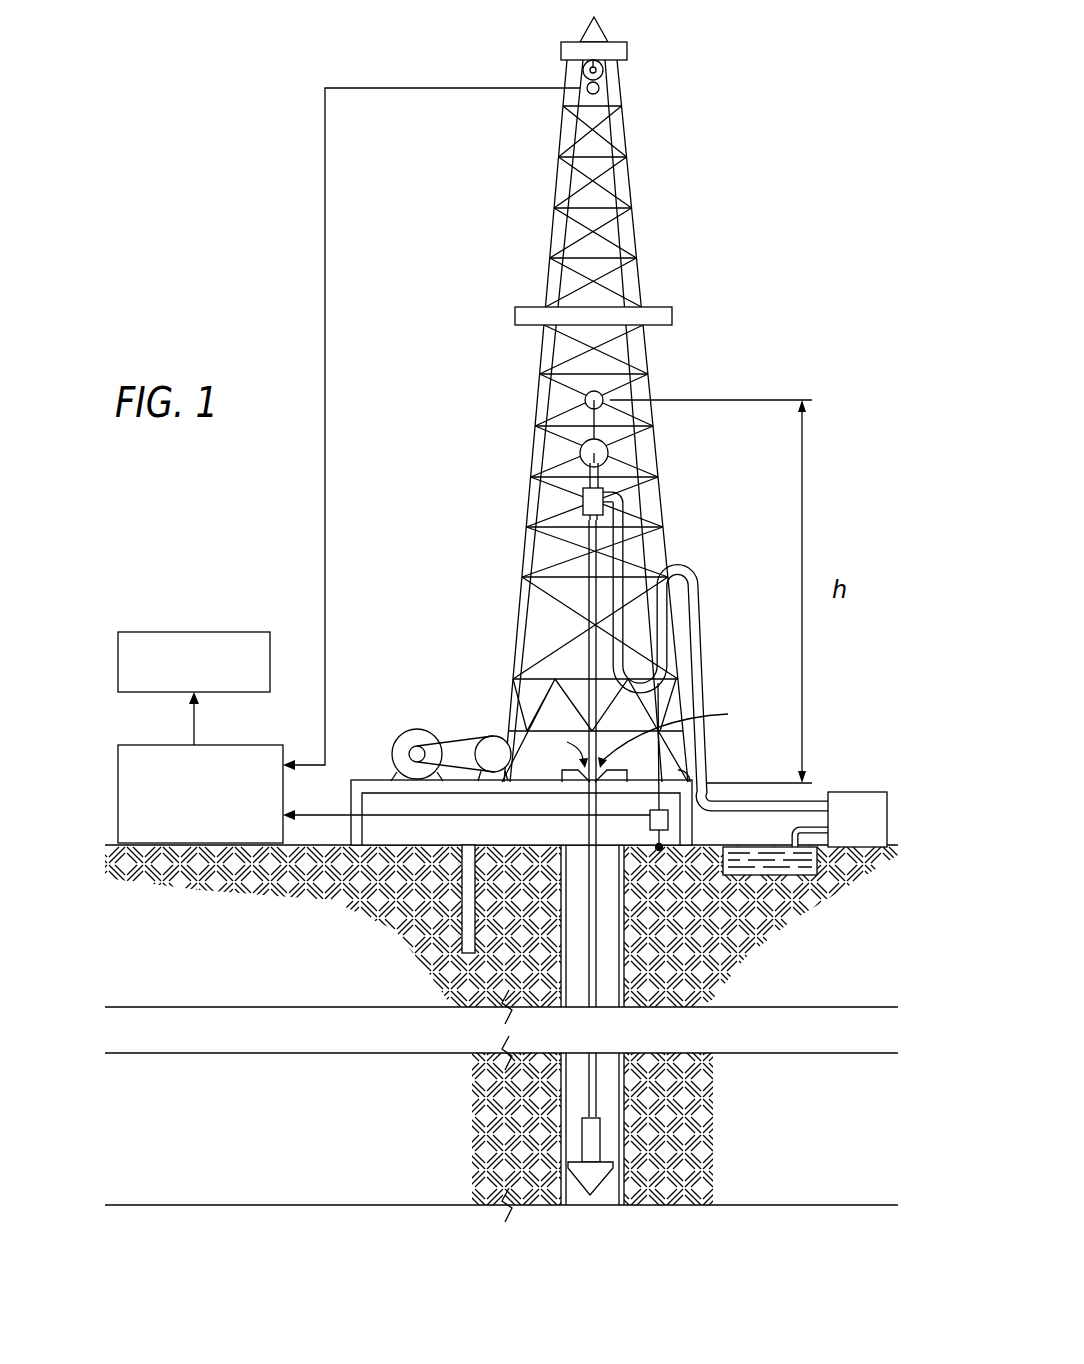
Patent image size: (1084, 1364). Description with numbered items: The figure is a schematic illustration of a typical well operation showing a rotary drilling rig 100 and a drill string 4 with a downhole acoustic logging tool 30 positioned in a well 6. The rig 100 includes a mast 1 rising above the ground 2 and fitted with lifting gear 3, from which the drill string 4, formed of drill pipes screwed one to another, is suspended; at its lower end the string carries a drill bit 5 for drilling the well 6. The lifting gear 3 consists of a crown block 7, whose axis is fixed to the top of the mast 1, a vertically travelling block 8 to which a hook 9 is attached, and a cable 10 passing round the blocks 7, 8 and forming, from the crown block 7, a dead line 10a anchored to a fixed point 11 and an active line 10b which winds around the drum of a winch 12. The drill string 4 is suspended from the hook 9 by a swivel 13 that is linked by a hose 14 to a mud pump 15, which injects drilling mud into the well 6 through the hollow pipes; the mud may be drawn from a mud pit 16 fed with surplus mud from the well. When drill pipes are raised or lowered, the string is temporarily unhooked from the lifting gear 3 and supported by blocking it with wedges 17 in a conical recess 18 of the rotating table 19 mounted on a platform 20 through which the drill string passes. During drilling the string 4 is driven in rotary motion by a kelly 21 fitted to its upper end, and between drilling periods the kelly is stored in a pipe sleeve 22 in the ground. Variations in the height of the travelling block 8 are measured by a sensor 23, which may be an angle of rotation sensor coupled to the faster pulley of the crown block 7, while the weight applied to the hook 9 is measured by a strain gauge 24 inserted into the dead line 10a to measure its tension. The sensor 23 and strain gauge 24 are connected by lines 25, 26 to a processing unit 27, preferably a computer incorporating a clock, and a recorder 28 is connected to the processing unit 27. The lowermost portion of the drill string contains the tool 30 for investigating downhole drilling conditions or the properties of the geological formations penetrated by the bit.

The drilling rig 100 is at (655, 512).
The mast 1 is at (657, 487).
The ground 2 is at (395, 843).
The lifting gear 3 is at (611, 421).
The drill string 4 is at (596, 957).
The drill bit 5 is at (596, 1142).
The well 6 is at (612, 1193).
The crown block 7 is at (604, 70).
The travelling block 8 is at (583, 400).
The hook 9 is at (607, 453).
The cable 10 is at (608, 287).
The dead line 10a is at (640, 517).
The active line 10b is at (535, 515).
The fixed point 11 is at (659, 849).
The winch 12 is at (455, 737).
The swivel 13 is at (583, 493).
The hose 14 is at (680, 568).
The mud pump 15 is at (848, 792).
The mud pit 16 is at (773, 868).
The wedges 17 is at (562, 750).
The conical recess 18 is at (679, 733).
The rotating table 19 is at (625, 772).
The platform 20 is at (683, 778).
The kelly 21 is at (588, 558).
The pipe sleeve 22 is at (462, 938).
The sensor 23 is at (600, 92).
The strain gauge 24 is at (668, 820).
The line 25 is at (323, 480).
The line 26 is at (323, 808).
The processing unit 27 is at (215, 745).
The recorder 28 is at (205, 632).
The acoustic logging tool 30 is at (596, 1083).